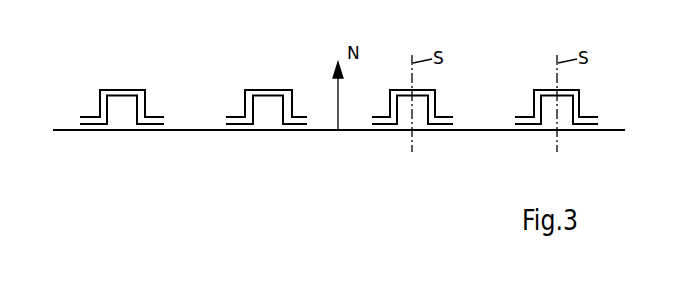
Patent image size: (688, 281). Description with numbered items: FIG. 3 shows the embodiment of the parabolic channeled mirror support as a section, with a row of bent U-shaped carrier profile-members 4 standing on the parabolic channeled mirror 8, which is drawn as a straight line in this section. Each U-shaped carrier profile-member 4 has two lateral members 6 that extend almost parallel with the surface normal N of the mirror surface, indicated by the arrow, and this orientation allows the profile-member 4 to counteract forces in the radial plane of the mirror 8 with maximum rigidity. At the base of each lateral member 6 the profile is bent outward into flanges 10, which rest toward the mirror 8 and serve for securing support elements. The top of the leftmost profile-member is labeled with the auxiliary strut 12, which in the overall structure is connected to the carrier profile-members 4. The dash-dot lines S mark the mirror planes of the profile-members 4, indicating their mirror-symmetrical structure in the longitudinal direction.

The U-shaped carrier profile-member 4 is at (339, 112).
The lateral member 6 is at (107, 105).
The parabolic channeled mirror 8 is at (362, 133).
The flange 10 is at (90, 125).
The auxiliary strut 12 is at (113, 89).